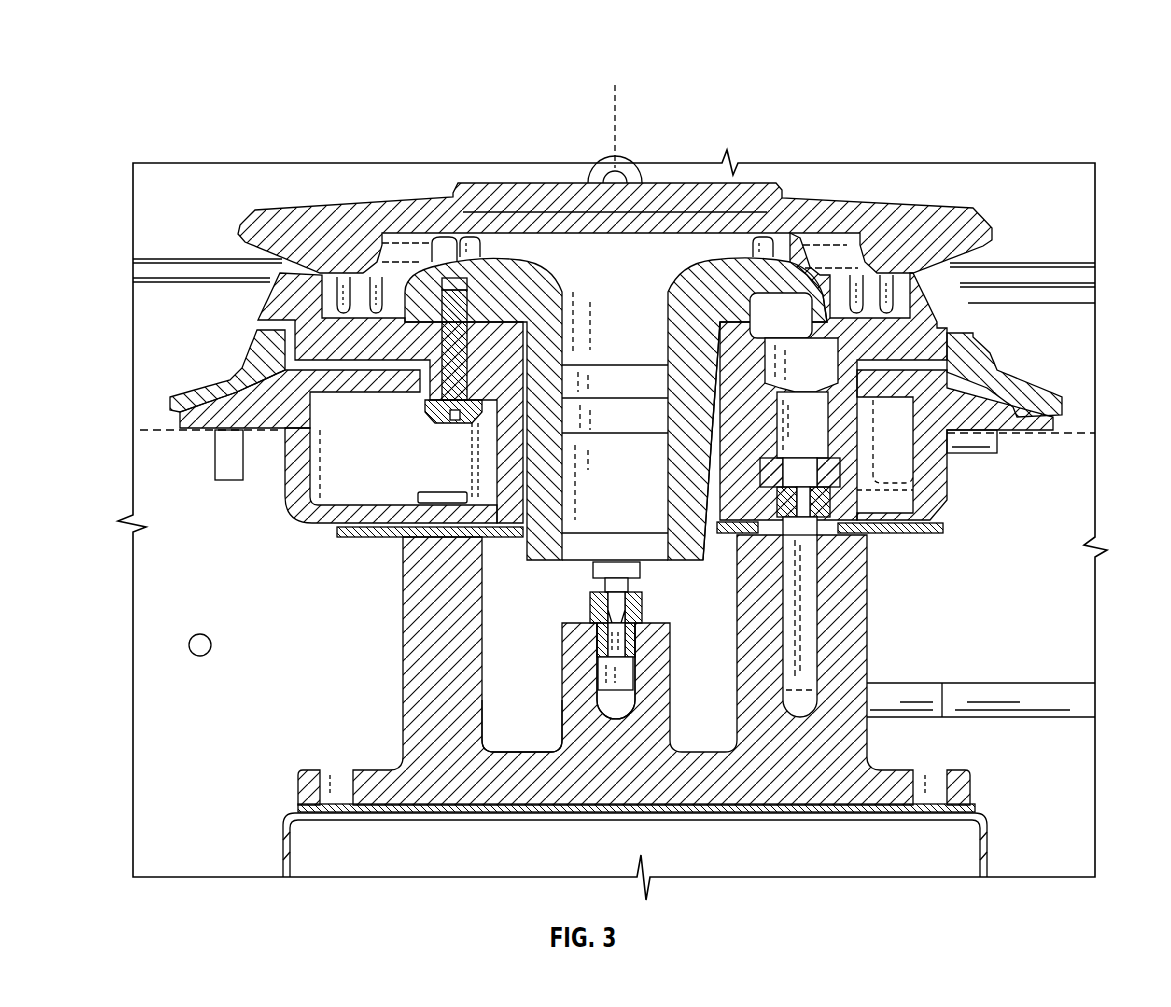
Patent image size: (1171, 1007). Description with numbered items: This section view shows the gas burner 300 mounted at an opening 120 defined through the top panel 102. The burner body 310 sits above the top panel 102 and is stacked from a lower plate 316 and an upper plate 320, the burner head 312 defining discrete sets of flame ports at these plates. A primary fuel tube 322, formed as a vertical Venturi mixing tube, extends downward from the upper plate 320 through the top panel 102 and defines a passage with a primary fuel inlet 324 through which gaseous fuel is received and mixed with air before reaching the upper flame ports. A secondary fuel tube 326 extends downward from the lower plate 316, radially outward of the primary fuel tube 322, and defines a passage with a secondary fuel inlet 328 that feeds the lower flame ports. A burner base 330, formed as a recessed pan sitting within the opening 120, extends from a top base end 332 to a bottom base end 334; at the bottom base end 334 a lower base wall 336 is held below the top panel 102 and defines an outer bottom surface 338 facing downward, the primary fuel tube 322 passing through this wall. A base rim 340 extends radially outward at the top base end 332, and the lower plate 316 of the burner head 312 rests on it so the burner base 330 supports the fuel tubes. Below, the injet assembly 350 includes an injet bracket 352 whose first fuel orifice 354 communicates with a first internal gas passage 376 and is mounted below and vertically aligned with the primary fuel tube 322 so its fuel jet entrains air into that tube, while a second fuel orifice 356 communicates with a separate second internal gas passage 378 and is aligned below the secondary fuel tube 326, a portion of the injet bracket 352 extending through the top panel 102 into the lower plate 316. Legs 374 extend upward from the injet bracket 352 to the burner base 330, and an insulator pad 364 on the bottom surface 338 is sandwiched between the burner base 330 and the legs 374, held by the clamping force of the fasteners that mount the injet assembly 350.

The gas burner 300 is at (86, 94).
The burner body 310 is at (168, 193).
The burner head 312 is at (293, 207).
The lower plate 316 is at (260, 353).
The upper plate 320 is at (282, 298).
The primary fuel tube 322 is at (522, 563).
The primary fuel inlet 324 is at (668, 568).
The secondary fuel tube 326 is at (837, 437).
The secondary fuel inlet 328 is at (807, 476).
The burner base 330 is at (354, 489).
The top base end 332 is at (284, 385).
The bottom base end 334 is at (354, 518).
The lower base wall 336 is at (353, 503).
The outer bottom surface 338 is at (368, 526).
The base rim 340 is at (1020, 410).
The injet assembly 350 is at (584, 706).
The injet bracket 352 is at (557, 740).
The first fuel orifice 354 is at (590, 612).
The second fuel orifice 356 is at (770, 485).
The insulator pad 364 is at (933, 528).
The legs 374 is at (403, 650).
The first internal gas passage 376 is at (625, 670).
The second internal gas passage 378 is at (818, 663).
The top panel 102 is at (1073, 433).
The opening 120 is at (270, 437).